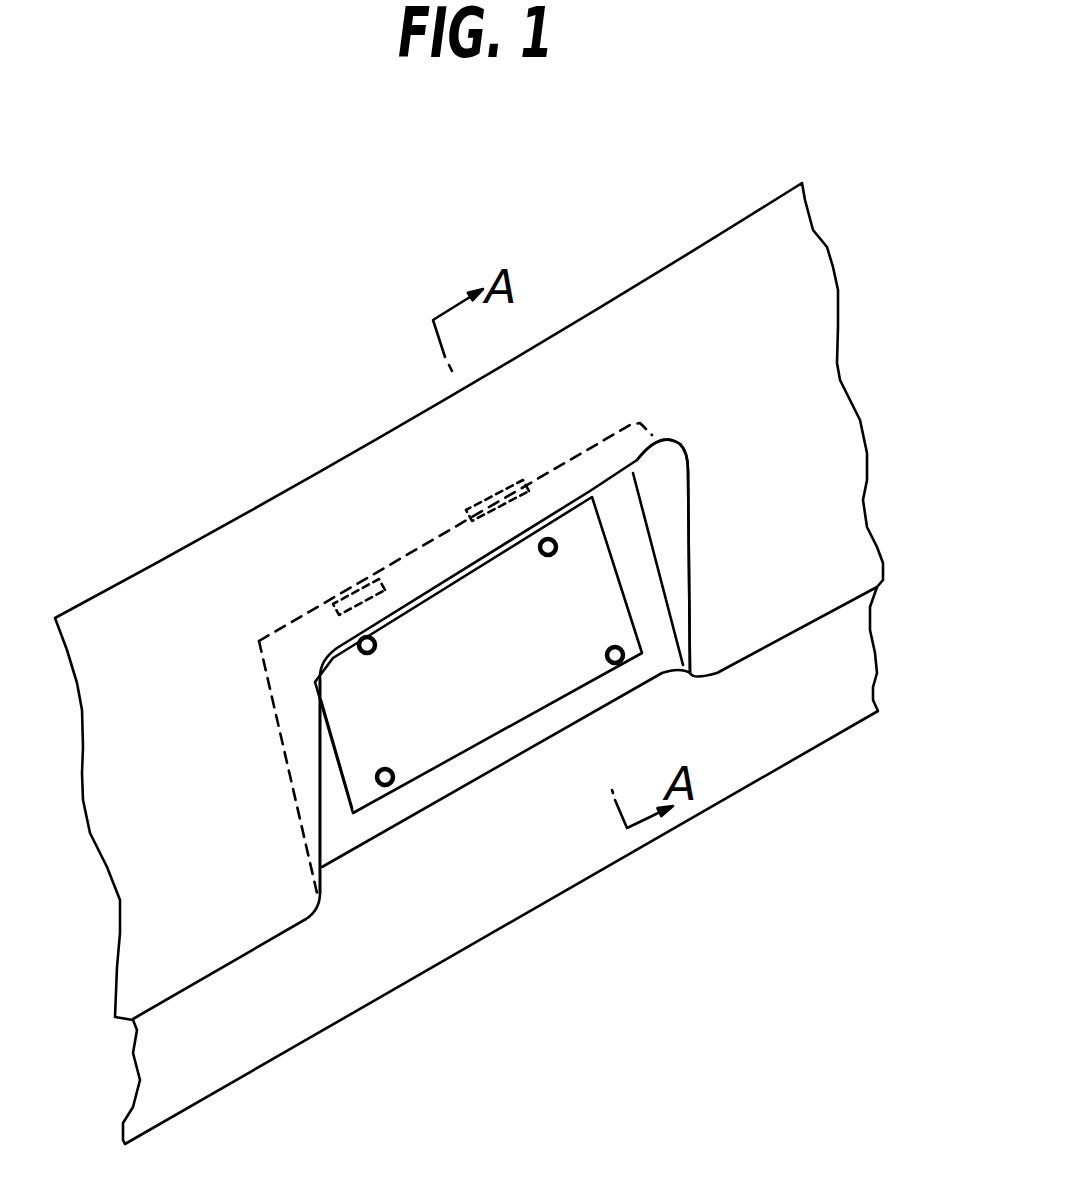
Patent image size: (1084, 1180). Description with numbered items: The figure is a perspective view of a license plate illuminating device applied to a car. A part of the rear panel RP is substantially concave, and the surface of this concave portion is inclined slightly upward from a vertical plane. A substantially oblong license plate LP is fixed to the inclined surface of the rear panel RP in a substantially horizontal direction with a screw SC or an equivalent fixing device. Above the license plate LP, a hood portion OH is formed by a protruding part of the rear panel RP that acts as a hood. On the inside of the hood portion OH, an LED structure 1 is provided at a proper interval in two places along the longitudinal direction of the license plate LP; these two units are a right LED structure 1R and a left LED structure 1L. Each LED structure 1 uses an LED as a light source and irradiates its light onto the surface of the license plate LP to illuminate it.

The LED structure 1 is at (431, 623).
The left LED structure 1L is at (353, 587).
The right LED structure 1R is at (497, 513).
The hood portion OH is at (637, 463).
The screw SC is at (615, 653).
The license plate LP is at (507, 712).
The rear panel RP is at (403, 805).